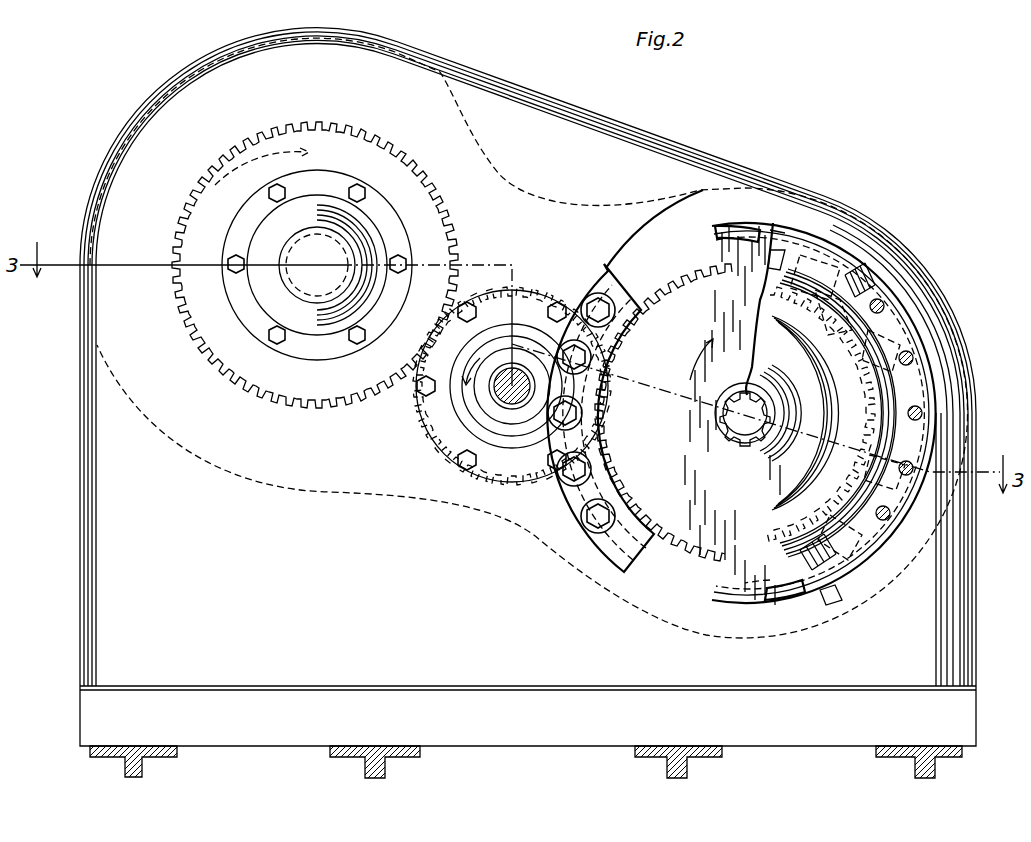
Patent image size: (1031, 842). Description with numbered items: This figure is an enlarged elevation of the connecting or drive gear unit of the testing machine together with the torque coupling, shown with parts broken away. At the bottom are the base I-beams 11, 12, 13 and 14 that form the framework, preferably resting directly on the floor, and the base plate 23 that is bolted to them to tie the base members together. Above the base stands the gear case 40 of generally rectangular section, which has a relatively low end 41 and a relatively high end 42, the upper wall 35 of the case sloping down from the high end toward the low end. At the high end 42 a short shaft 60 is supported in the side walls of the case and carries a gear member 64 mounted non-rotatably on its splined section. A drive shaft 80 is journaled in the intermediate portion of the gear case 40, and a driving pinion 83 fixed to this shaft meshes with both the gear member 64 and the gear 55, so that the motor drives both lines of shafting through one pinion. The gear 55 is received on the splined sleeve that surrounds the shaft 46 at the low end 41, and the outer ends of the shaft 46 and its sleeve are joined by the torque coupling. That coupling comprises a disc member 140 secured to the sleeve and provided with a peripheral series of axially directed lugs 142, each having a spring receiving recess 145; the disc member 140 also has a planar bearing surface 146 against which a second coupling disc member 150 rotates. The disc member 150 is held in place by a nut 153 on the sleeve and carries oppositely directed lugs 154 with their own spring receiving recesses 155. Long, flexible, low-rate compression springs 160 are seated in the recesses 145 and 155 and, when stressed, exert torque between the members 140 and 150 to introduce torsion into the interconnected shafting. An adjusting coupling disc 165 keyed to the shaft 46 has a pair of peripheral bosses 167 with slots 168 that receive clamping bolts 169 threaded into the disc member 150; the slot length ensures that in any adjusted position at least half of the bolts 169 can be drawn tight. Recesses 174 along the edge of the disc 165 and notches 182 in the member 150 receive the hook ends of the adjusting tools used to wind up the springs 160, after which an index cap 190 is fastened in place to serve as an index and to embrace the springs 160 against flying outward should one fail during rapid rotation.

The I-beam 11 is at (882, 766).
The I-beam 12 is at (702, 766).
The I-beam 13 is at (400, 766).
The I-beam 14 is at (160, 766).
The base plate 23 is at (522, 690).
The housing top wall 35 is at (572, 93).
The gear case 40 is at (93, 461).
The low end 41 is at (938, 292).
The high end 42 is at (132, 130).
The shaft 46 is at (730, 432).
The gear 55 is at (687, 414).
The short shaft 60 is at (275, 300).
The gear member 64 is at (350, 130).
The drive shaft 80 is at (512, 386).
The driving pinion 83 is at (513, 290).
The disc member 140 is at (805, 600).
The lugs 142 is at (830, 250).
The spring receiving recess 145 is at (935, 452).
The planar bearing surface 146 is at (770, 526).
The coupling disc member 150 is at (785, 402).
The nut 153 is at (790, 413).
The lugs 154 is at (884, 276).
The spring receiving recess 155 is at (772, 562).
The compression springs 160 is at (948, 332).
The adjusting coupling disc 165 is at (650, 250).
The peripheral bosses 167 is at (640, 560).
The slots 168 is at (600, 563).
The clamping bolts 169 is at (598, 293).
The recesses 174 is at (728, 226).
The notches 182 is at (568, 300).
The index cap 190 is at (818, 585).